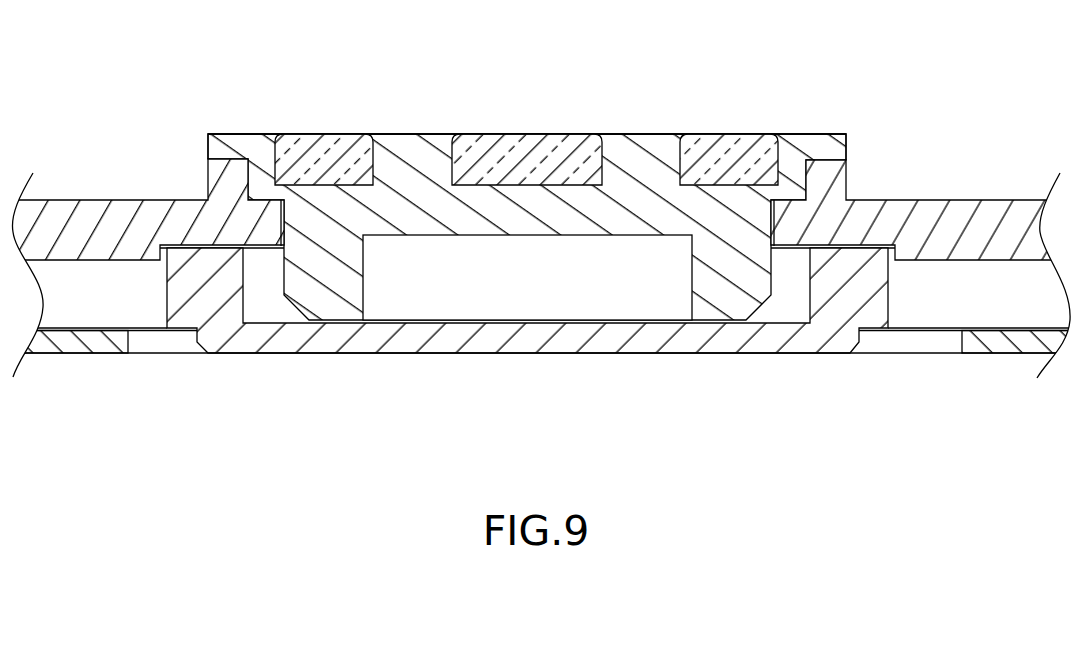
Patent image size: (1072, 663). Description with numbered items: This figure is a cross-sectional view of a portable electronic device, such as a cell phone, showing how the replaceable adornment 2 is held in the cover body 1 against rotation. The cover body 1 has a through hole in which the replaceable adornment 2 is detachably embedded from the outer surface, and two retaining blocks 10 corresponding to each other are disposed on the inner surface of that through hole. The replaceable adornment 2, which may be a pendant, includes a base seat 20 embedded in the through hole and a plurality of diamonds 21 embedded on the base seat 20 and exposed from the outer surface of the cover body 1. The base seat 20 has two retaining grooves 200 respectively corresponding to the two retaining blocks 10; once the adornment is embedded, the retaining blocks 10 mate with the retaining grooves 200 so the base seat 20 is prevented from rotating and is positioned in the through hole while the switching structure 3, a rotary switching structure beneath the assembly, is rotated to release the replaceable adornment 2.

The cover body 1 is at (968, 202).
The replaceable adornment 2 is at (650, 65).
The switching structure 3 is at (560, 352).
The retaining block 10 is at (790, 224).
The base seat 20 is at (648, 134).
The diamond 21 is at (528, 134).
The retaining groove 200 is at (771, 219).